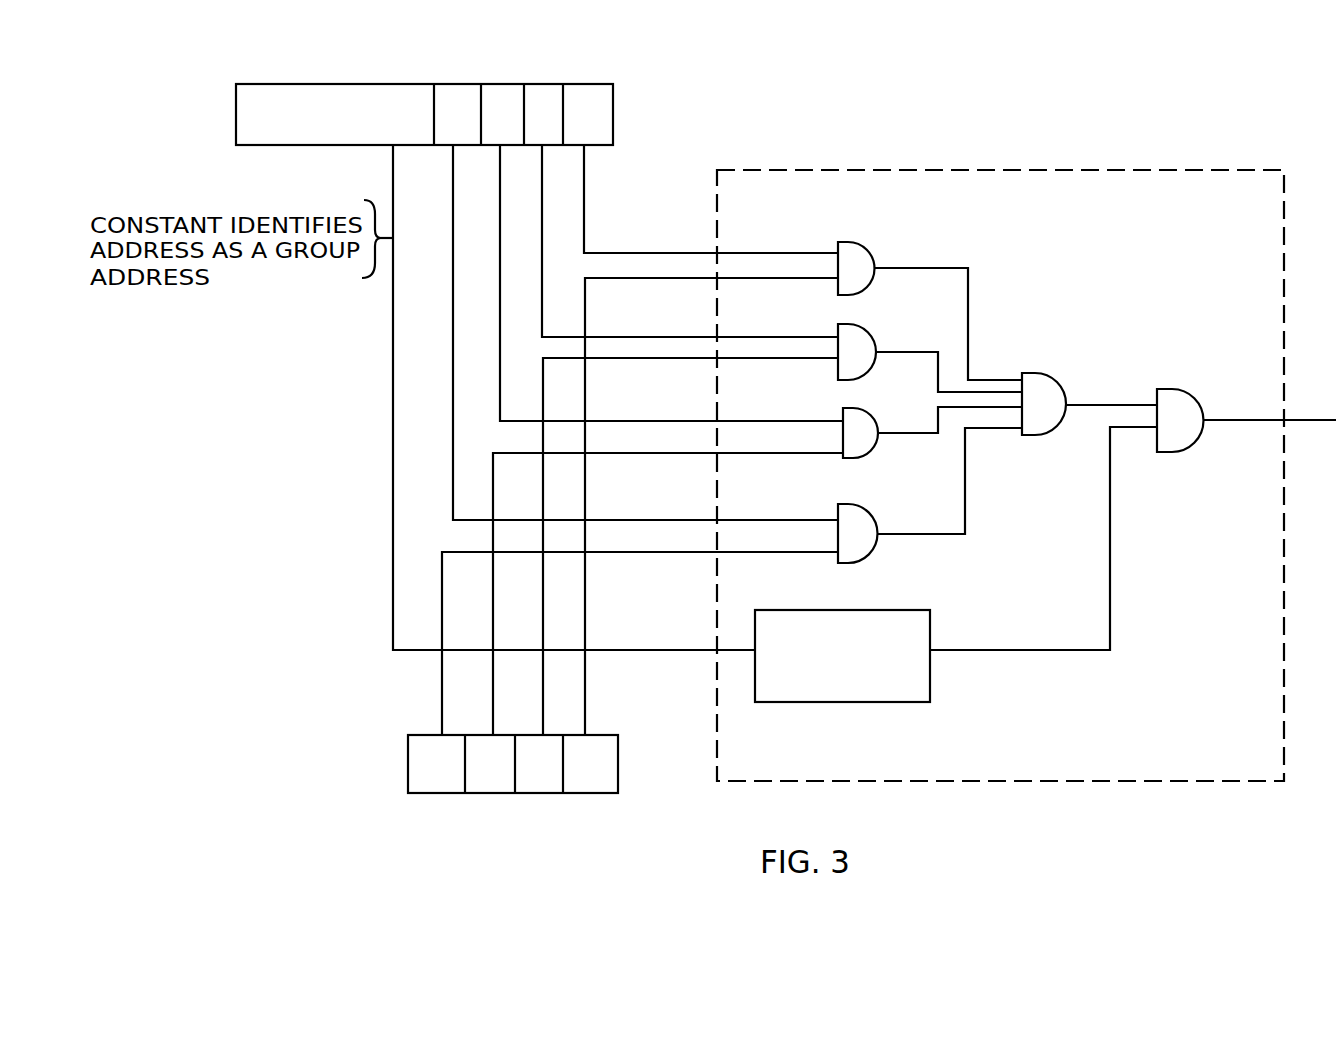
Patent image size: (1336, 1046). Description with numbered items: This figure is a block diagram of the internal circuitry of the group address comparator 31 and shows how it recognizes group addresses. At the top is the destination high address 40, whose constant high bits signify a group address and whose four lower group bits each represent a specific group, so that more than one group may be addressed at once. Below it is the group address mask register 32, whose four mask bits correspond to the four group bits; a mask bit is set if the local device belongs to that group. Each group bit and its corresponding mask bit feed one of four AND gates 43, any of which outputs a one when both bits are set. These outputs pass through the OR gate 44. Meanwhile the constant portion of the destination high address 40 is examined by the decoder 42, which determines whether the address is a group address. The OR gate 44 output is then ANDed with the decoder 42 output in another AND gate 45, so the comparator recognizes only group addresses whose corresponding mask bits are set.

The destination high address 40 is at (258, 135).
The group address mask register 32 is at (417, 743).
The group address comparator 31 is at (1000, 460).
The AND gates 43 is at (862, 268).
The OR gate 44 is at (1040, 390).
The AND gate 45 is at (1183, 415).
The decoder 42 is at (892, 683).